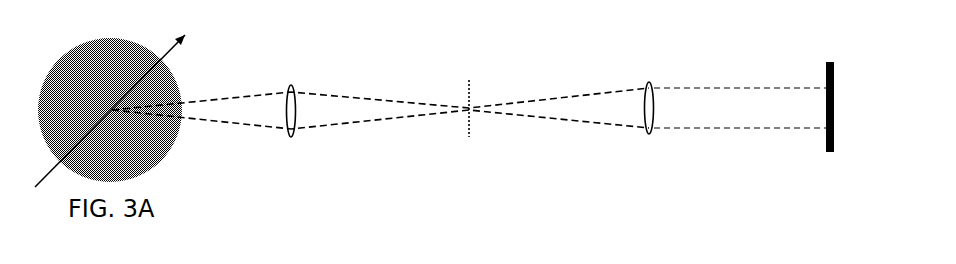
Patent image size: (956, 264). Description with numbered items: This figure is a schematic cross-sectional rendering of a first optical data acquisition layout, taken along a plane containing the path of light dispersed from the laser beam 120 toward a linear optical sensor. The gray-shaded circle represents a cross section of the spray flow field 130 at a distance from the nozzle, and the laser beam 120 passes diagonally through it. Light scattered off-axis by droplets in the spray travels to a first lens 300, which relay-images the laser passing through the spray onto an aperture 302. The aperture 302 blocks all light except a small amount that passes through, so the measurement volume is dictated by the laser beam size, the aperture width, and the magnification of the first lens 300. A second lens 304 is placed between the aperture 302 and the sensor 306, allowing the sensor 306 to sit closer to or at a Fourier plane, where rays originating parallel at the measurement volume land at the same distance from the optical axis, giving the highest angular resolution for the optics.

The laser beam 120 is at (116, 97).
The spray flow field 130 is at (113, 155).
The first lens 300 is at (309, 100).
The aperture 302 is at (468, 95).
The second lens 304 is at (646, 124).
The sensor 306 is at (793, 93).